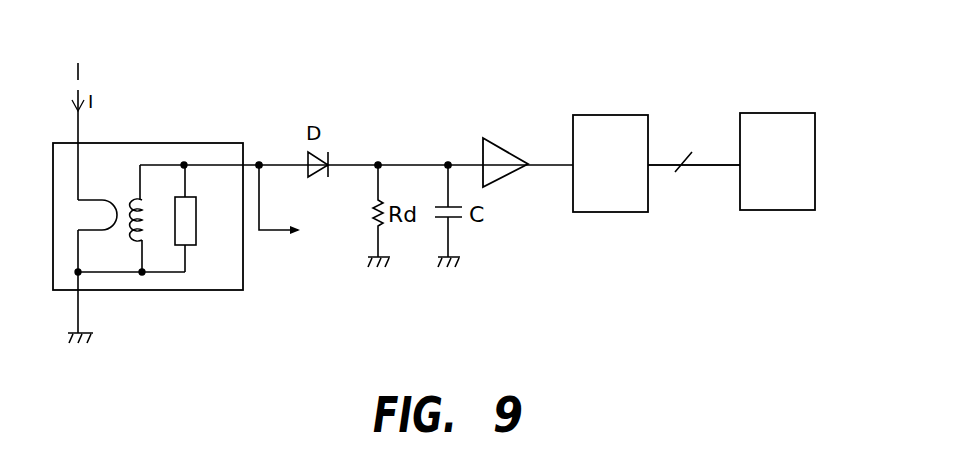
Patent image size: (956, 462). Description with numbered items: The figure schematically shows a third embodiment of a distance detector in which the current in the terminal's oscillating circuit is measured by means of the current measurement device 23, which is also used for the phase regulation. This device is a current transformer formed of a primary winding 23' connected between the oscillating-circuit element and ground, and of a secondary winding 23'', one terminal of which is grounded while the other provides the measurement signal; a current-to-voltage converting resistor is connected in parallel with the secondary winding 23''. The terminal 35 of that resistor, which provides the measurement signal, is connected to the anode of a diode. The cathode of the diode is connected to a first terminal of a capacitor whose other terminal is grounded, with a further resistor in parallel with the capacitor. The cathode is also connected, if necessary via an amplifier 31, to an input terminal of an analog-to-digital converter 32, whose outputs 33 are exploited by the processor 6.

The current measurement device 23 is at (148, 212).
The secondary winding 23'' is at (117, 209).
The primary winding 23' is at (118, 262).
The terminal of resistor R14 35 is at (259, 162).
The amplifier 31 is at (480, 137).
The analog-to-digital converter 32 is at (623, 113).
The outputs 33 is at (718, 165).
The processor 6 is at (788, 112).